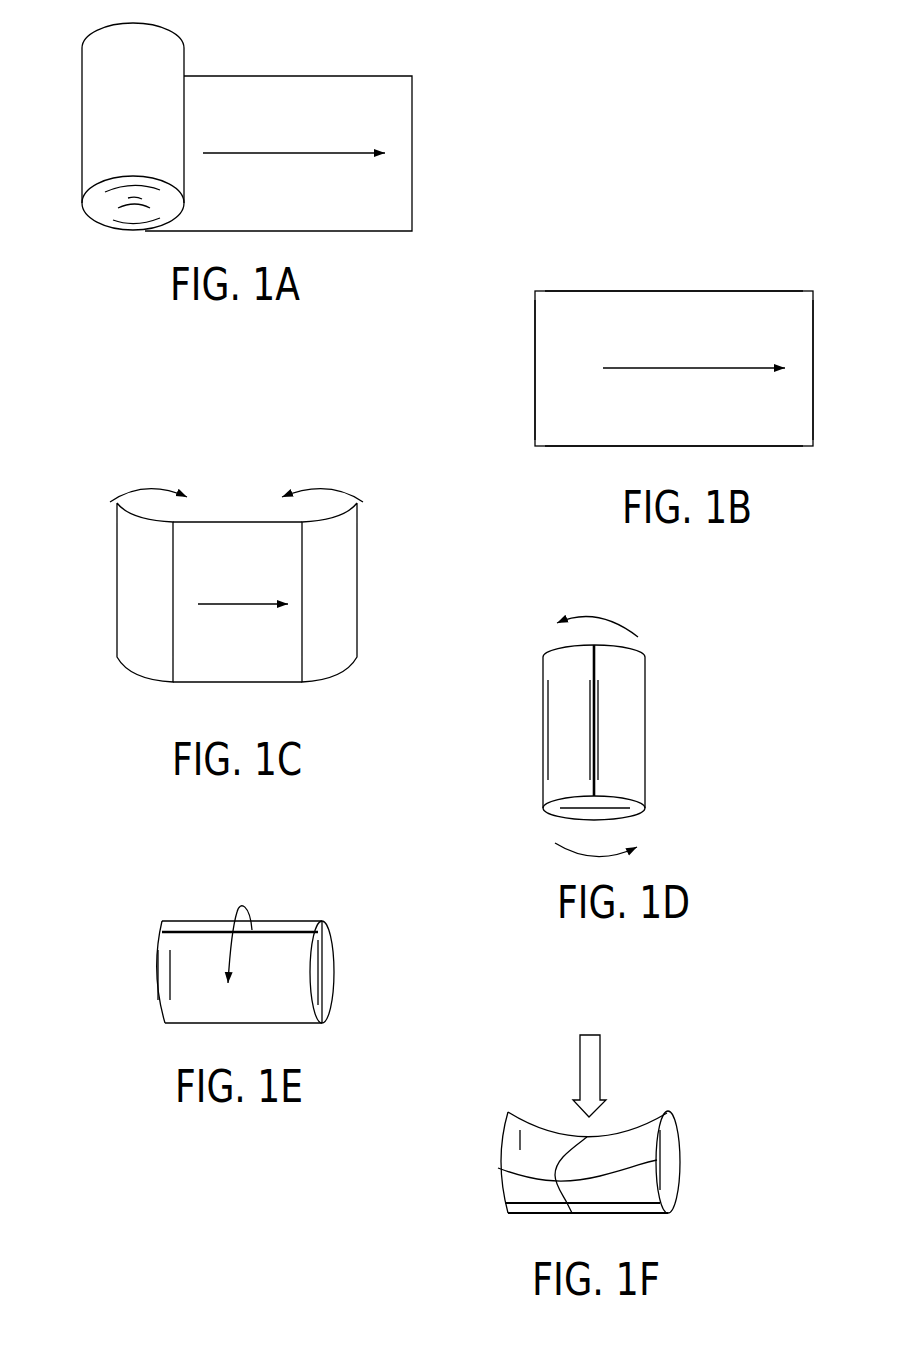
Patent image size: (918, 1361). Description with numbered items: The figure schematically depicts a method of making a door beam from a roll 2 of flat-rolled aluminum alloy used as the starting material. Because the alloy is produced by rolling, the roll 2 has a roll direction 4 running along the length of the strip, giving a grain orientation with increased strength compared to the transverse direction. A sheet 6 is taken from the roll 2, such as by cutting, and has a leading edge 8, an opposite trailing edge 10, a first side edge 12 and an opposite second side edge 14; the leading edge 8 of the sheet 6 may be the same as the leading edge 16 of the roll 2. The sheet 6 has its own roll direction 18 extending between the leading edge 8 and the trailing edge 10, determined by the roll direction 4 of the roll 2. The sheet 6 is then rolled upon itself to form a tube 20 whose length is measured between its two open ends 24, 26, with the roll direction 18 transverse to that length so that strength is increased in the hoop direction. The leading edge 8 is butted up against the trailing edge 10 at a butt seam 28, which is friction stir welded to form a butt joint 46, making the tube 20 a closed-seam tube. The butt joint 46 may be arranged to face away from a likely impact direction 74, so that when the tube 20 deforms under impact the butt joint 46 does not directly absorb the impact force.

In FIG. 1A, the roll 2 is at (95, 118).
In FIG. 1A, the roll direction 4 is at (291, 153).
In FIG. 1A, the leading edge of the roll 16 is at (423, 130).
In FIG. 1B, the sheet 6 is at (788, 301).
In FIG. 1B, the leading edge 8 is at (818, 375).
In FIG. 1C, the leading edge 8 is at (362, 585).
In FIG. 1D, the leading edge 8 is at (601, 723).
In FIG. 1B, the trailing edge 10 is at (530, 362).
In FIG. 1C, the trailing edge 10 is at (110, 587).
In FIG. 1D, the trailing edge 10 is at (588, 705).
In FIG. 1B, the first side edge 12 is at (765, 450).
In FIG. 1C, the first side edge 12 is at (260, 688).
In FIG. 1D, the first side edge 12 is at (635, 823).
In FIG. 1E, the first side edge 12 is at (334, 935).
In FIG. 1B, the second side edge 14 is at (603, 288).
In FIG. 1C, the second side edge 14 is at (223, 517).
In FIG. 1D, the second side edge 14 is at (634, 643).
In FIG. 1E, the second side edge 14 is at (155, 1002).
In FIG. 1B, the roll direction of the sheet 18 is at (688, 368).
In FIG. 1C, the roll direction of the sheet 18 is at (238, 604).
In FIG. 1D, the tube 20 is at (680, 665).
In FIG. 1E, the tube 20 is at (162, 903).
In FIG. 1F, the tube 20 is at (678, 1087).
In FIG. 1D, the open end 24 is at (588, 807).
In FIG. 1E, the open end 24 is at (316, 970).
In FIG. 1F, the open end 24 is at (663, 1170).
In FIG. 1D, the open end 26 is at (563, 668).
In FIG. 1E, the open end 26 is at (172, 987).
In FIG. 1F, the open end 26 is at (520, 1158).
In FIG. 1D, the butt seam 28 is at (596, 758).
In FIG. 1E, the butt joint 46 is at (278, 932).
In FIG. 1F, the butt joint 46 is at (543, 1208).
In FIG. 1F, the impact direction 74 is at (602, 1067).